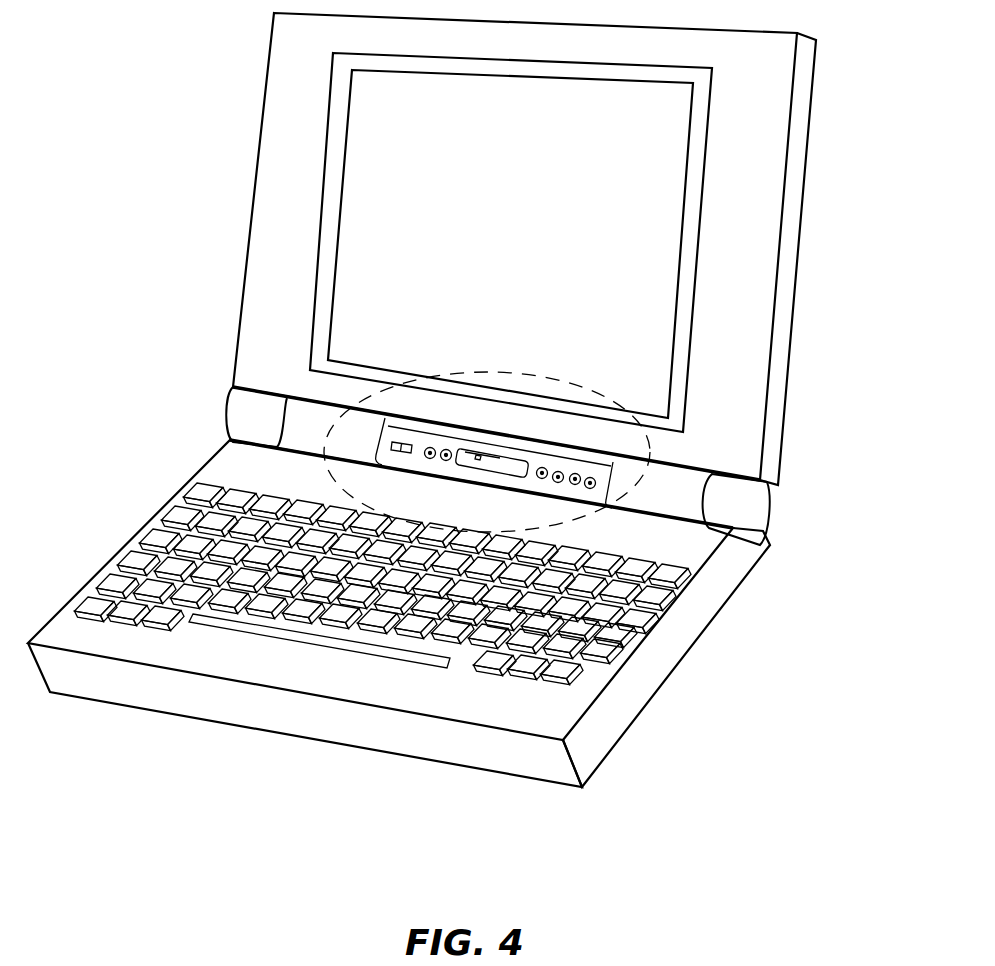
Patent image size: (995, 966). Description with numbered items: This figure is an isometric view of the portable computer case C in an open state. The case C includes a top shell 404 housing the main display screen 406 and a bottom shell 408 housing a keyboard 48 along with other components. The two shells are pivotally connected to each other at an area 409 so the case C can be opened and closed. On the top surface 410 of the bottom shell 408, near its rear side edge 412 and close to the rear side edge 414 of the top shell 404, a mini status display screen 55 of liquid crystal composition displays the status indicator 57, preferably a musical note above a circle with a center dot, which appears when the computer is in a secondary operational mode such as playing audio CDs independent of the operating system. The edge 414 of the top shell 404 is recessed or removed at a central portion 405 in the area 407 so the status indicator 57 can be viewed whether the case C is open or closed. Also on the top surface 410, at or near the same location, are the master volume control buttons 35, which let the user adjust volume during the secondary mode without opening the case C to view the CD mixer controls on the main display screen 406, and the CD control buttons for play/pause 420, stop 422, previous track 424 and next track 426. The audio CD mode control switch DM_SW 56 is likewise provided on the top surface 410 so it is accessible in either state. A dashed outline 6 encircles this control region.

The portable computer case C is at (124, 302).
The top shell 404 is at (811, 182).
The main display screen 406 is at (532, 267).
The bottom shell 408 is at (669, 701).
The top surface 410 is at (239, 419).
The rear side edge 412 is at (230, 388).
The rear side edge 414 is at (463, 431).
The keyboard 48 is at (160, 529).
The connector area 6 is at (647, 457).
The area 409 is at (379, 453).
The area 407 is at (417, 459).
The audio CD mode control switch DM_SW 56 is at (411, 439).
The master volume control buttons 35 is at (431, 446).
The status display screen 55 is at (499, 445).
The status indicator 57 is at (468, 461).
The central portion 405 is at (524, 482).
The play/pause button 420 is at (544, 466).
The stop button 422 is at (561, 470).
The previous track button 424 is at (577, 472).
The next track button 426 is at (588, 491).